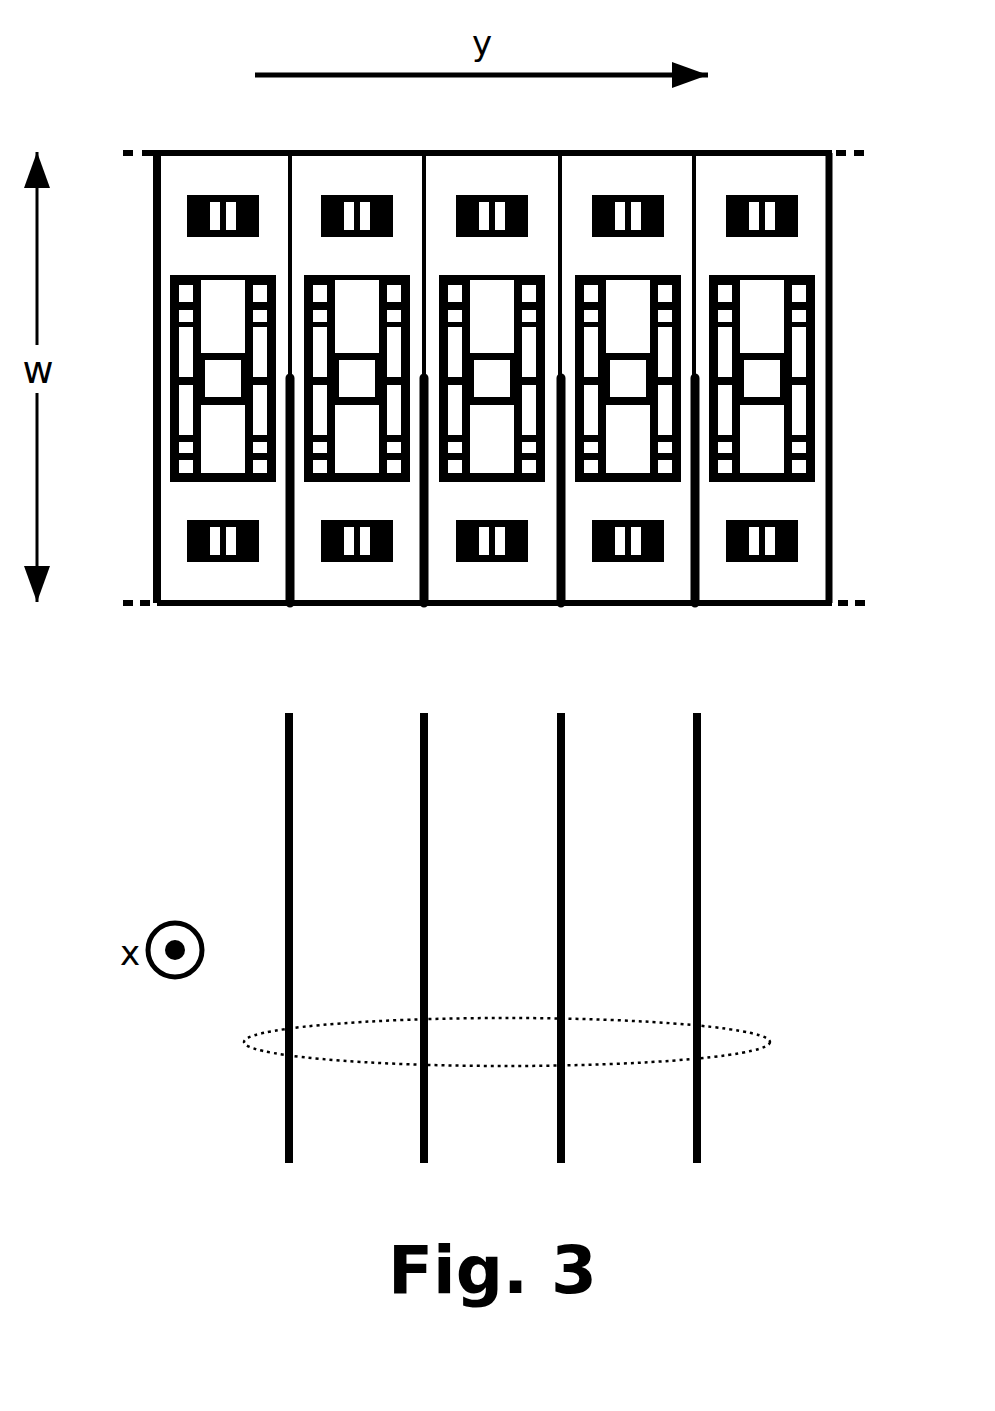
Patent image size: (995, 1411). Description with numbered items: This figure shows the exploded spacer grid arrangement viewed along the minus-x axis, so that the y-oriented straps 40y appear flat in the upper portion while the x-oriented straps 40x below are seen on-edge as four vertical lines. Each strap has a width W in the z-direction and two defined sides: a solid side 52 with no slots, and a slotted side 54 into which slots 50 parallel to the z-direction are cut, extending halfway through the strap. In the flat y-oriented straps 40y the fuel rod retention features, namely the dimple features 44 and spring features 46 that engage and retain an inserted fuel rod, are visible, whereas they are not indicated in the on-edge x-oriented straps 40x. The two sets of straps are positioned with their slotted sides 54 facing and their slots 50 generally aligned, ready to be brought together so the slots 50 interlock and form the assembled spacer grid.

The y-oriented straps 40y is at (187, 125).
The x-oriented straps 40x is at (772, 1040).
The dimple features 44 is at (482, 197).
The spring features 46 is at (632, 430).
The slots 50 is at (427, 606).
The solid side 52 is at (765, 150).
The slotted side 54 is at (766, 607).